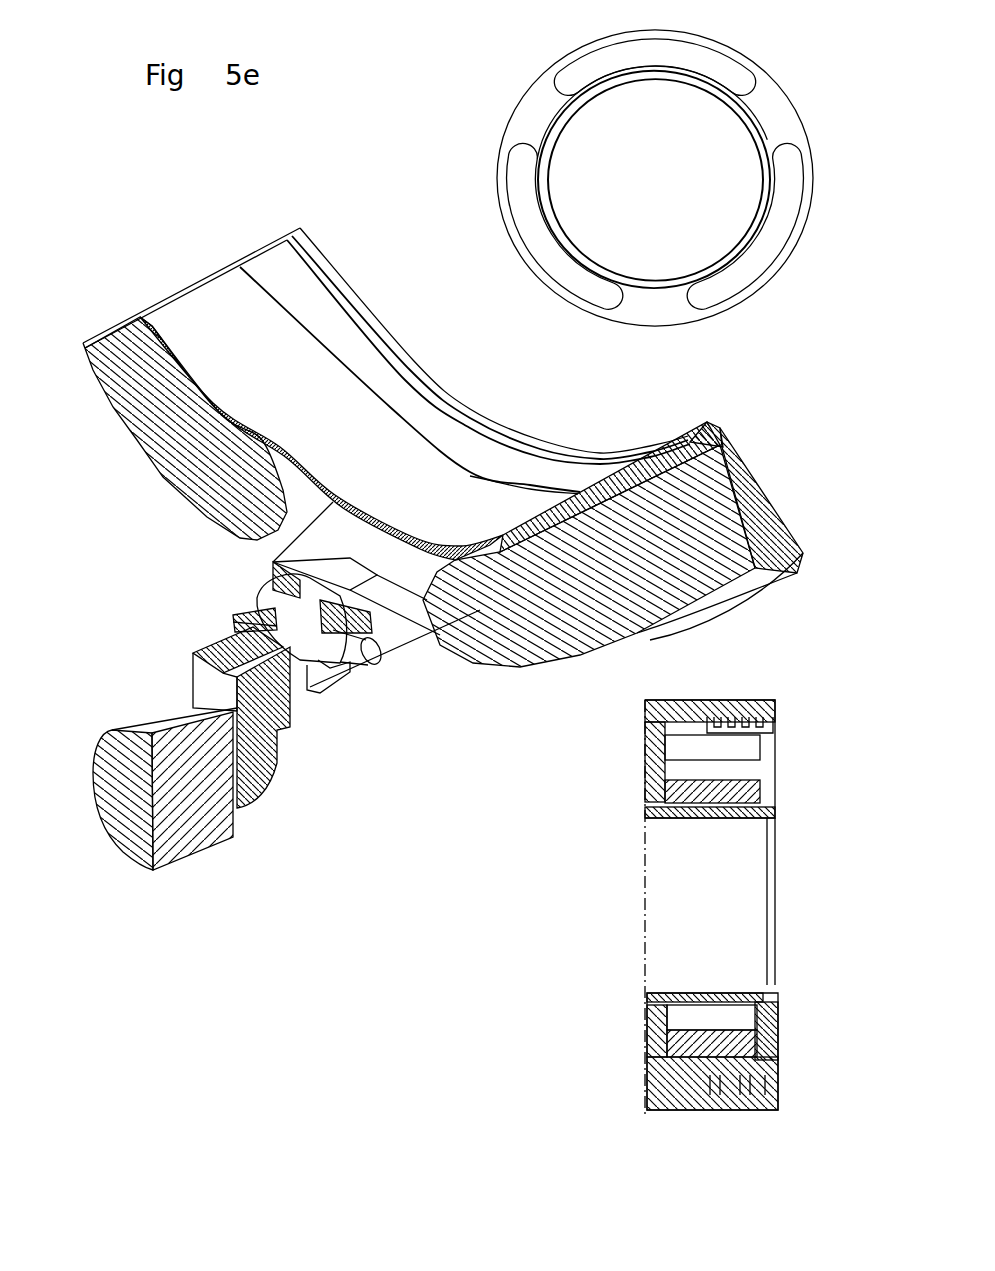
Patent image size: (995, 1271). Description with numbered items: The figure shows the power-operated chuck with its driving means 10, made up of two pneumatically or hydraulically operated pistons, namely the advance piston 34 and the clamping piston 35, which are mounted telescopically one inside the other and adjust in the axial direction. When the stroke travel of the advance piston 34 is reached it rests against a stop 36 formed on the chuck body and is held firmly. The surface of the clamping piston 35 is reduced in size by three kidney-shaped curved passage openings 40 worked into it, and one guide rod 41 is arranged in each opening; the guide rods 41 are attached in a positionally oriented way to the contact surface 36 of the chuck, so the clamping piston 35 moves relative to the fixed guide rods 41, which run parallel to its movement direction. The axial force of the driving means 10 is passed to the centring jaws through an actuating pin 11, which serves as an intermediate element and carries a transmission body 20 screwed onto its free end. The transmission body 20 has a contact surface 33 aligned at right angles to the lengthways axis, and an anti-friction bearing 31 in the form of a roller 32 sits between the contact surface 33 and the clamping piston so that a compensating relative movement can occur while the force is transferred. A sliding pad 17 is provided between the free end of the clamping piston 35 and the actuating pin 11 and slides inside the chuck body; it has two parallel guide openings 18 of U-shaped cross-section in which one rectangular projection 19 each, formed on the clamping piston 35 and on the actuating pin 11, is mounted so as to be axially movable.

The driving means 10 is at (431, 349).
The actuating pin 11 is at (193, 813).
The sliding pad 17 is at (236, 600).
The guide openings 18 is at (237, 627).
The rectangular projection 19 is at (280, 730).
The transmission body 20 is at (210, 677).
The anti-friction bearing 31 is at (345, 668).
The roller 32 is at (297, 610).
The contact surface 33 is at (290, 662).
The advance piston 34 is at (720, 1050).
The clamping piston 35 is at (755, 568).
The stop 36 is at (680, 727).
The passage openings 40 is at (705, 462).
The guide rod 41 is at (590, 575).